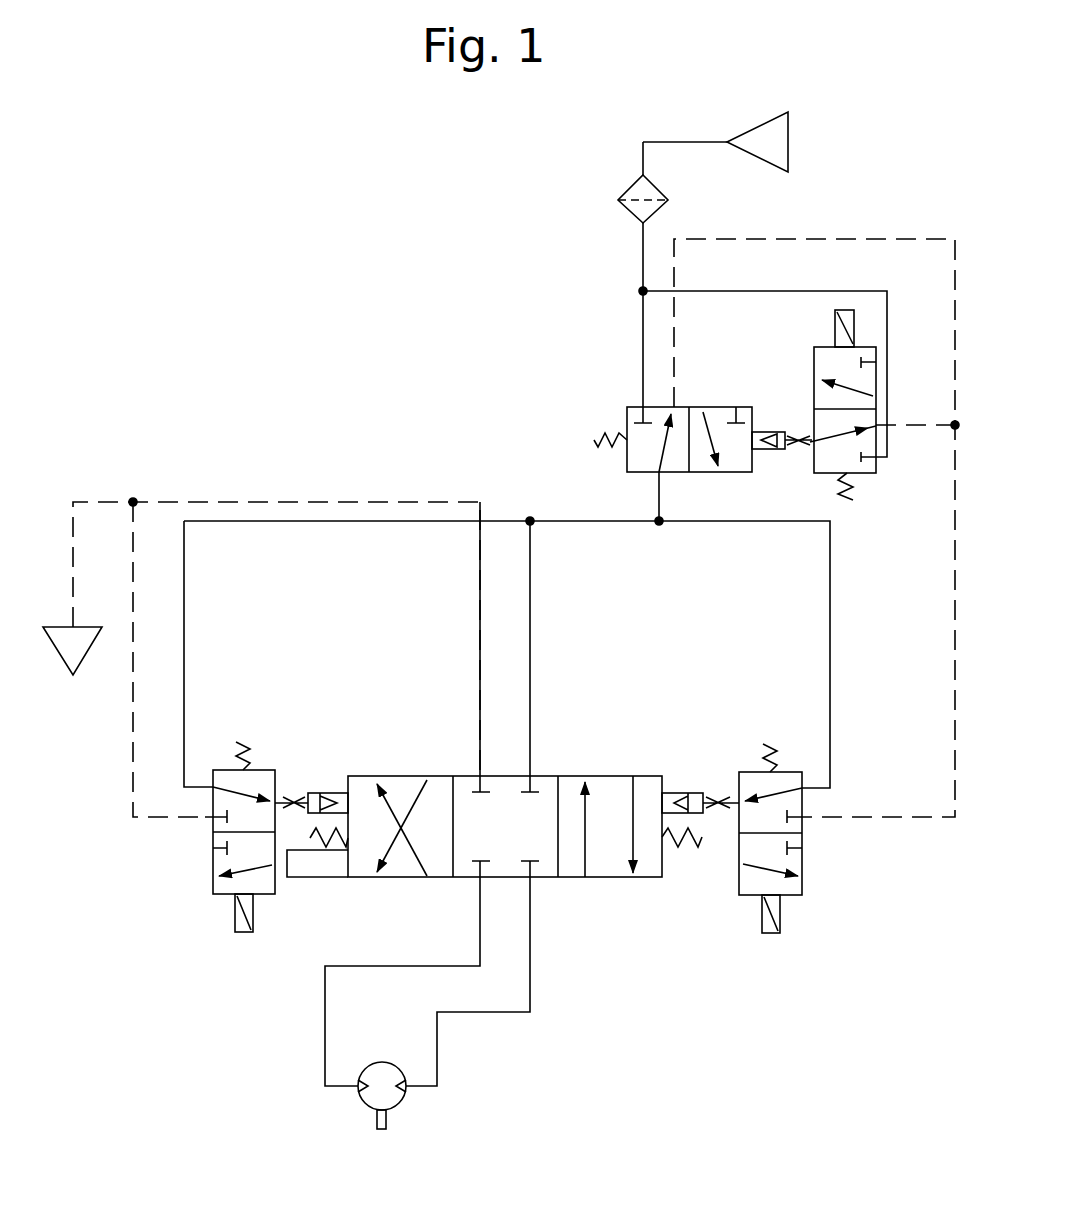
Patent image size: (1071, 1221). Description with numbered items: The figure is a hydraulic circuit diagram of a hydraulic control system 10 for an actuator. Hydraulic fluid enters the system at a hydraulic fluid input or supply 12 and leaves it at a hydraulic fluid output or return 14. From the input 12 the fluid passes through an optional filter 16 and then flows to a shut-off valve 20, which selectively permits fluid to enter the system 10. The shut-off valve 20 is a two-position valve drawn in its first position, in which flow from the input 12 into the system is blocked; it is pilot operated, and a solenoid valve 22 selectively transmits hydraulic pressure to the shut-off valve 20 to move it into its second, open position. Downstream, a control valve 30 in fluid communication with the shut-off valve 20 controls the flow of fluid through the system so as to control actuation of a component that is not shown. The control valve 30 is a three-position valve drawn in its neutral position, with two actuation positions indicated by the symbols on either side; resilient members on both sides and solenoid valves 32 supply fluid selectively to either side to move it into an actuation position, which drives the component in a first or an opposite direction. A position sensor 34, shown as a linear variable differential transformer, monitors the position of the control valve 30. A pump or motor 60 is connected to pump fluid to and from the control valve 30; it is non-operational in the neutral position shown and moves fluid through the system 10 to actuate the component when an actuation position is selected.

The hydraulic control system 10 is at (226, 246).
The hydraulic fluid input 12 is at (762, 124).
The hydraulic fluid output 14 is at (87, 657).
The filter 16 is at (627, 188).
The shut-off valve 20 is at (627, 412).
The solenoid valve 22 is at (814, 357).
The control valve 30 is at (612, 878).
The solenoid valves 32 is at (213, 882).
The position sensor 34 is at (300, 878).
The pump 60 is at (397, 1105).